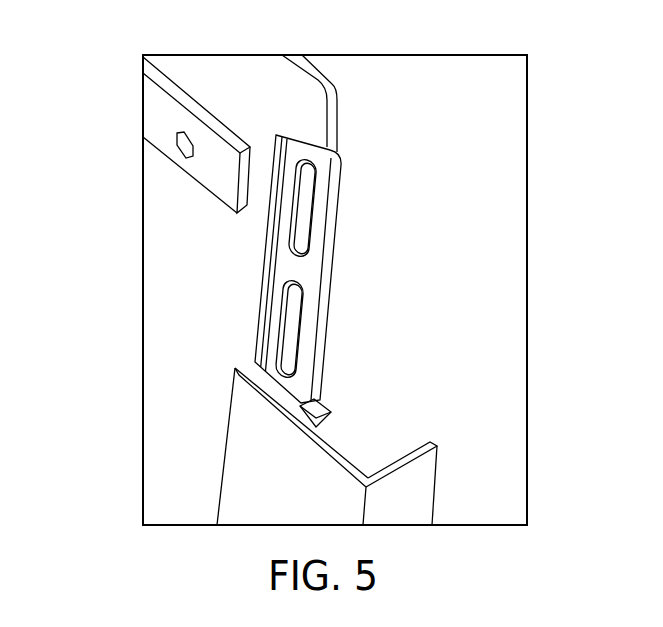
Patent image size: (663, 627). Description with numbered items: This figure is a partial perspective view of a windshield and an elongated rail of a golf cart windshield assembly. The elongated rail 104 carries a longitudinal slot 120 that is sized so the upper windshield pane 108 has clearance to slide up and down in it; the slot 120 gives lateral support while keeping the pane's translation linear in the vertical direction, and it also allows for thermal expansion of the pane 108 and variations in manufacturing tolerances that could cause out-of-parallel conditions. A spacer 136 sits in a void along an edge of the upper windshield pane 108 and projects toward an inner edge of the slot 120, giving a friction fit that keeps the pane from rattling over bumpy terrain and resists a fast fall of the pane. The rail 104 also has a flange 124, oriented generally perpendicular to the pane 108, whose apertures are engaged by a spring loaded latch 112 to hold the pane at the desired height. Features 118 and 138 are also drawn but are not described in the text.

The elongated rail 104 is at (369, 429).
The upper windshield pane 108 is at (317, 97).
The spring loaded latch 112 is at (197, 131).
The flange 118 is at (418, 440).
The longitudinal slot 120 is at (324, 402).
The flange 124 is at (430, 467).
The spacer 136 is at (338, 177).
The bent edge portions 138 is at (251, 364).